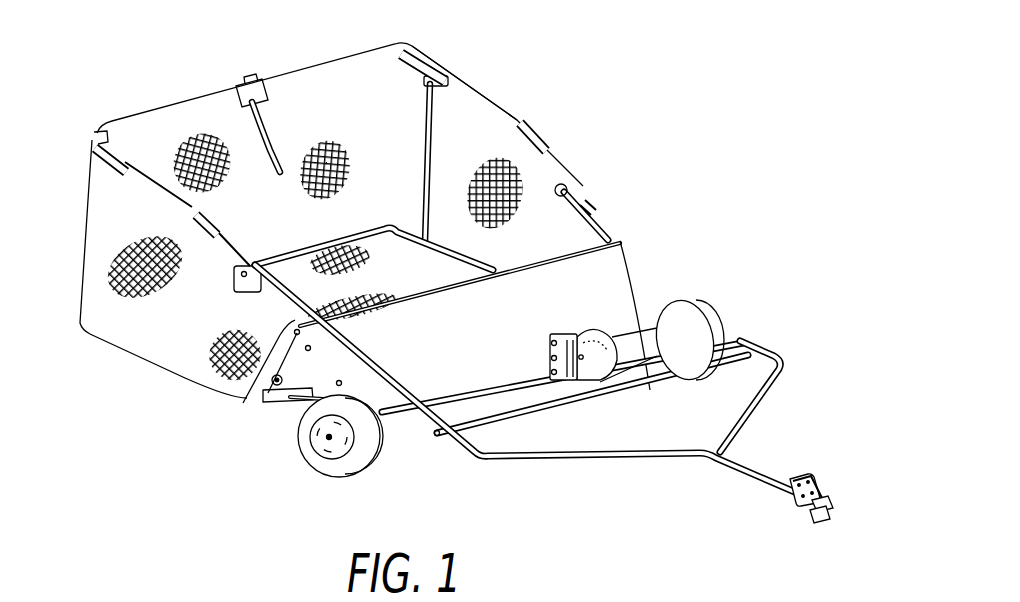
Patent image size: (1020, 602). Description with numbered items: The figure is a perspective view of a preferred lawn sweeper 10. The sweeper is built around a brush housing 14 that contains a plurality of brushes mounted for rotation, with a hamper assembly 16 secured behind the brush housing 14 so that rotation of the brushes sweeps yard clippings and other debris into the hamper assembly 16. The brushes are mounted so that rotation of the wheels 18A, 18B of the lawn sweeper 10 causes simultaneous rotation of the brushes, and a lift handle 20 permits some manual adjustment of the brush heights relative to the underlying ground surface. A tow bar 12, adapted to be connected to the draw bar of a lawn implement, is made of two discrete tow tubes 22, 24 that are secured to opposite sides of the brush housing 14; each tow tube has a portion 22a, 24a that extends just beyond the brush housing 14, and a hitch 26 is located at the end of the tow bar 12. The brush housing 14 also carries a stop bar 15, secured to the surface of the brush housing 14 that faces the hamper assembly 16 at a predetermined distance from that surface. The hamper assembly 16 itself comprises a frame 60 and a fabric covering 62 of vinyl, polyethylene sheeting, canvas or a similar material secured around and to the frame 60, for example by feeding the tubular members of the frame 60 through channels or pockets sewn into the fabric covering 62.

The lawn sweeper 10 is at (602, 166).
The tow bar 12 is at (786, 406).
The brush housing 14 is at (633, 288).
The stop bar 15 is at (283, 404).
The hamper assembly 16 is at (192, 87).
The wheel 18A is at (343, 474).
The wheel 18B is at (703, 311).
The lift handle 20 is at (650, 388).
The tow tube 22 is at (584, 455).
The portion of tow tube 22a is at (248, 392).
The tow tube 24 is at (786, 373).
The portion of tow tube 24a is at (617, 234).
The hitch 26 is at (833, 518).
The frame 60 is at (95, 140).
The fabric covering 62 is at (354, 60).